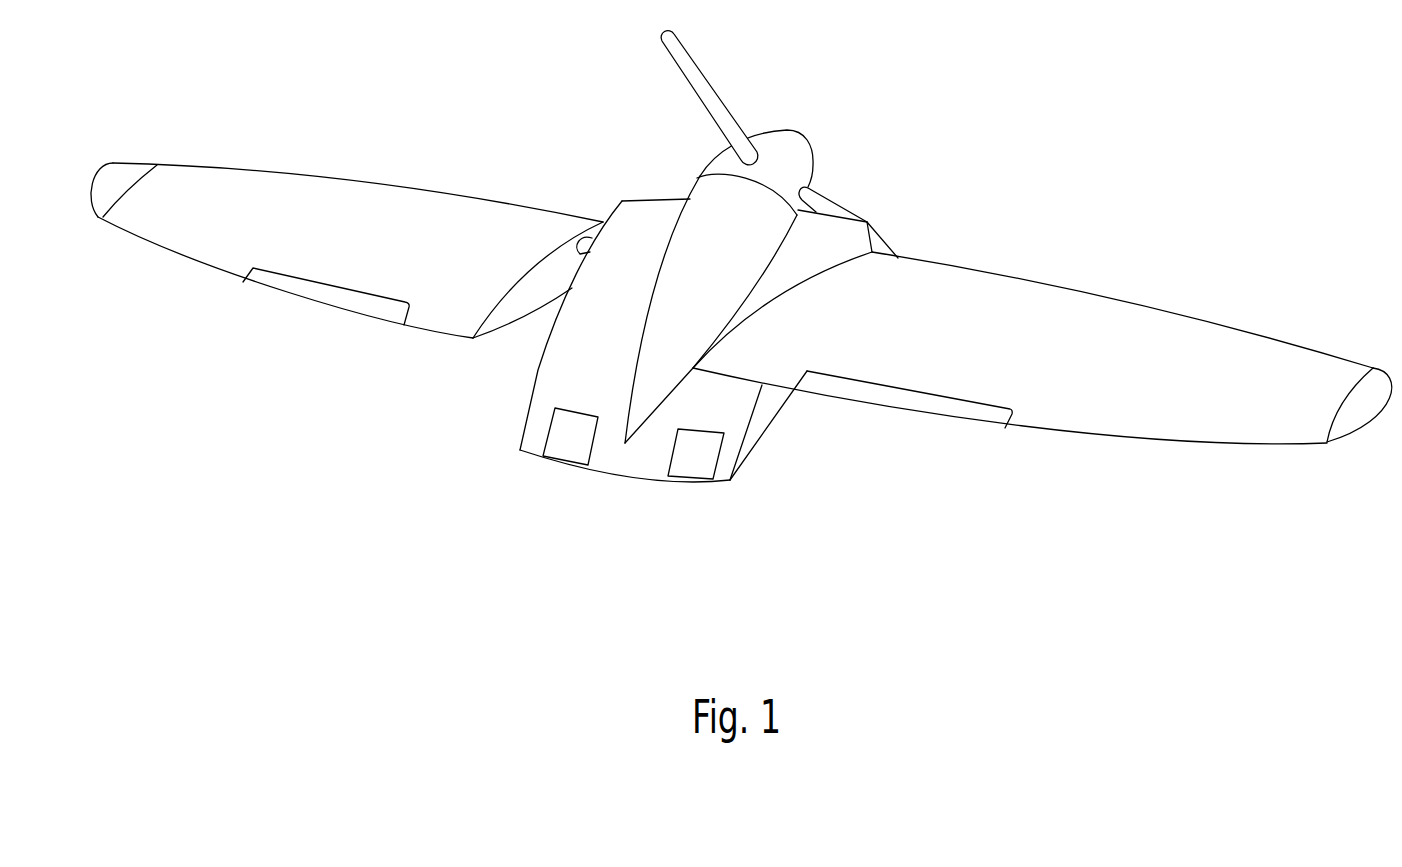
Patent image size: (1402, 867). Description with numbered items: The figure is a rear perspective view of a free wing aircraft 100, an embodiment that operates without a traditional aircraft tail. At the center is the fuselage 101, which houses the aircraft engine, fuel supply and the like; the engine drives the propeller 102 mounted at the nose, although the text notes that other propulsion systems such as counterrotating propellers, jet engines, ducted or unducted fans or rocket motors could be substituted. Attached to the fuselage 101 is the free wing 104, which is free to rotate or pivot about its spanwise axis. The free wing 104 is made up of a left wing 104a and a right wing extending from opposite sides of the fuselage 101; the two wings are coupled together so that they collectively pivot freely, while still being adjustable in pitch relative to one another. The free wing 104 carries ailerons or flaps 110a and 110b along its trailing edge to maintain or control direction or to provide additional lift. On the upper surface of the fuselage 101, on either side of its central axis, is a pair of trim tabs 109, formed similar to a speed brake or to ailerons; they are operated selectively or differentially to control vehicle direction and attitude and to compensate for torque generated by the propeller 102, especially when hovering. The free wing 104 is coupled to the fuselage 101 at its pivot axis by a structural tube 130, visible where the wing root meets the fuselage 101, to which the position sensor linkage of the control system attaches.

The free wing aircraft 100 is at (741, 324).
The fuselage 101 is at (523, 403).
The propeller 102 is at (802, 130).
The free wing 104 is at (1043, 275).
The left wing 104a is at (367, 181).
The trim tabs 109 is at (682, 477).
The aileron or flap 110a is at (280, 297).
The aileron or flap 110b is at (1248, 330).
The structural tube 130 is at (578, 249).